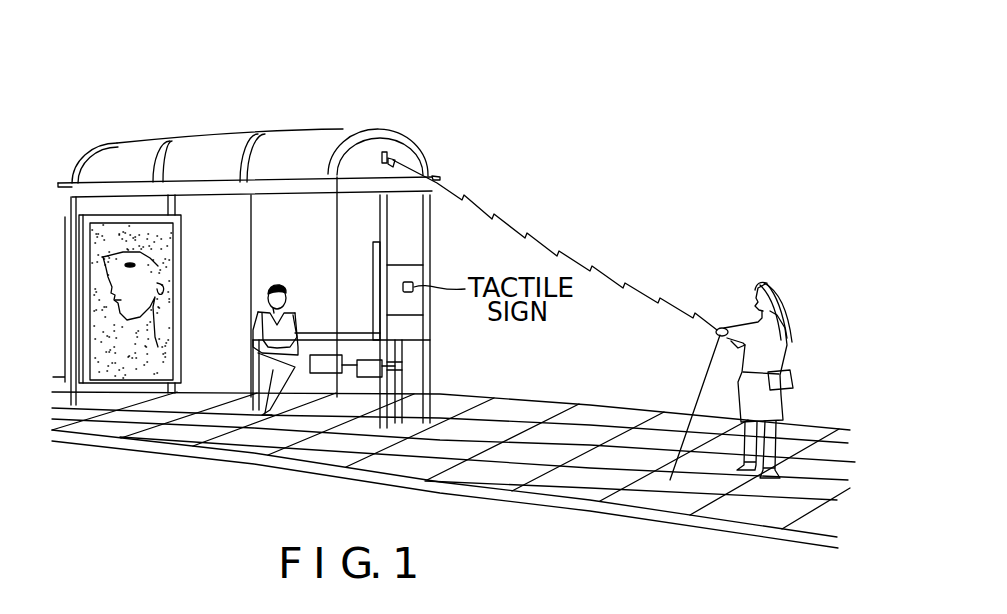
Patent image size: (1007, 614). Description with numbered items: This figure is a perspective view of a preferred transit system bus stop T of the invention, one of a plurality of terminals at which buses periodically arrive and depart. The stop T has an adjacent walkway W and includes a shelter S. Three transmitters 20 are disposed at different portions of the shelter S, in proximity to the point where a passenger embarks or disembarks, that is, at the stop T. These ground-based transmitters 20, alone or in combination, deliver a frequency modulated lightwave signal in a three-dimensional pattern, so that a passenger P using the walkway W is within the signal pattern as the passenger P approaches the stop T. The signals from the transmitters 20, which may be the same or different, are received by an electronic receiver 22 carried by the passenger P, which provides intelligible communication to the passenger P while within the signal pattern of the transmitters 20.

The transmitter 20 is at (125, 138).
The electronic receiver 22 is at (718, 326).
The bus stop T is at (297, 62).
The shelter S is at (415, 134).
The passenger P is at (796, 329).
The walkway W is at (553, 488).